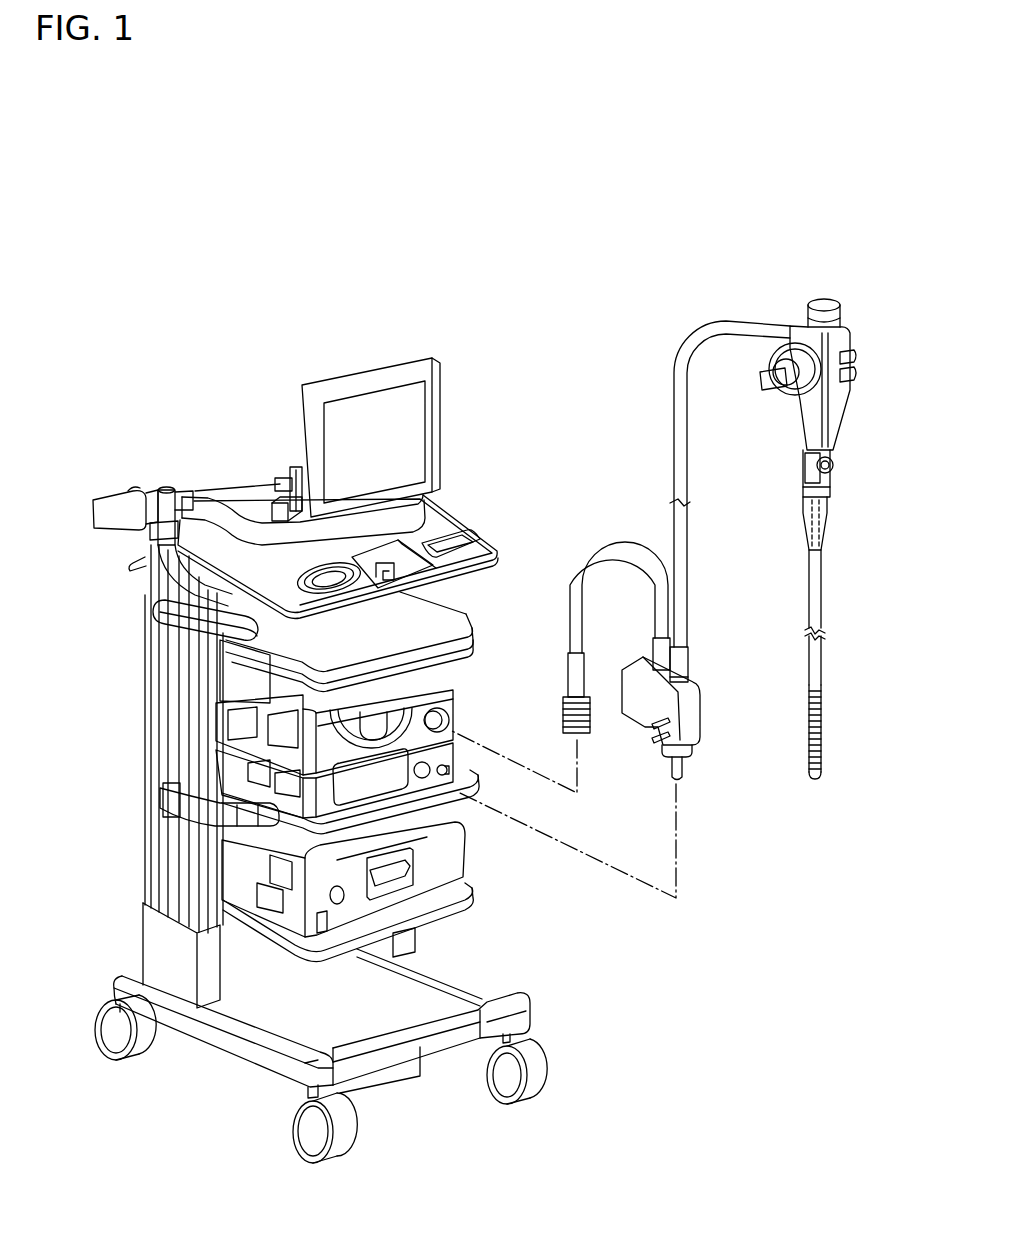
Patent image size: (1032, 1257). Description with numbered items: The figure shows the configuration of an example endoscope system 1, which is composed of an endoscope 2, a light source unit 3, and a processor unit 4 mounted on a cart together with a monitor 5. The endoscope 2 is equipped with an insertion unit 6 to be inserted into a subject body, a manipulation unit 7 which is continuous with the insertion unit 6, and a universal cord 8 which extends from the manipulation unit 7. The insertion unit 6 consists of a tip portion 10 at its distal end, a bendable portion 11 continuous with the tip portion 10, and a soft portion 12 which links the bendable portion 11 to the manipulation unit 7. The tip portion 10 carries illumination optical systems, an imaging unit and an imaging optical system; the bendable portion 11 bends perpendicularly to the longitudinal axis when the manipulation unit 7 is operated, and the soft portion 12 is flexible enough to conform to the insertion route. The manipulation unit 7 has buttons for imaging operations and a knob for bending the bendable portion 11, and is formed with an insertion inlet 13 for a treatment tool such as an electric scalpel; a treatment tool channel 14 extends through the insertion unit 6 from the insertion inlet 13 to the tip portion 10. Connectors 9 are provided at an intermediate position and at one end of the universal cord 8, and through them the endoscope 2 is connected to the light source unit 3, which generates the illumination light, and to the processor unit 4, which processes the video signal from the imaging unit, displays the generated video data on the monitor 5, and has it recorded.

The endoscope system 1 is at (208, 262).
The endoscope 2 is at (709, 302).
The light source unit 3 is at (237, 767).
The processor unit 4 is at (237, 717).
The monitor 5 is at (378, 402).
The insertion unit 6 is at (833, 655).
The manipulation unit 7 is at (857, 328).
The universal cord 8 is at (673, 433).
The connectors 9 is at (573, 680).
The tip portion 10 is at (820, 770).
The bendable portion 11 is at (825, 708).
The soft portion 12 is at (818, 590).
The insertion inlet 13 is at (834, 464).
The treatment tool channel 14 is at (829, 523).